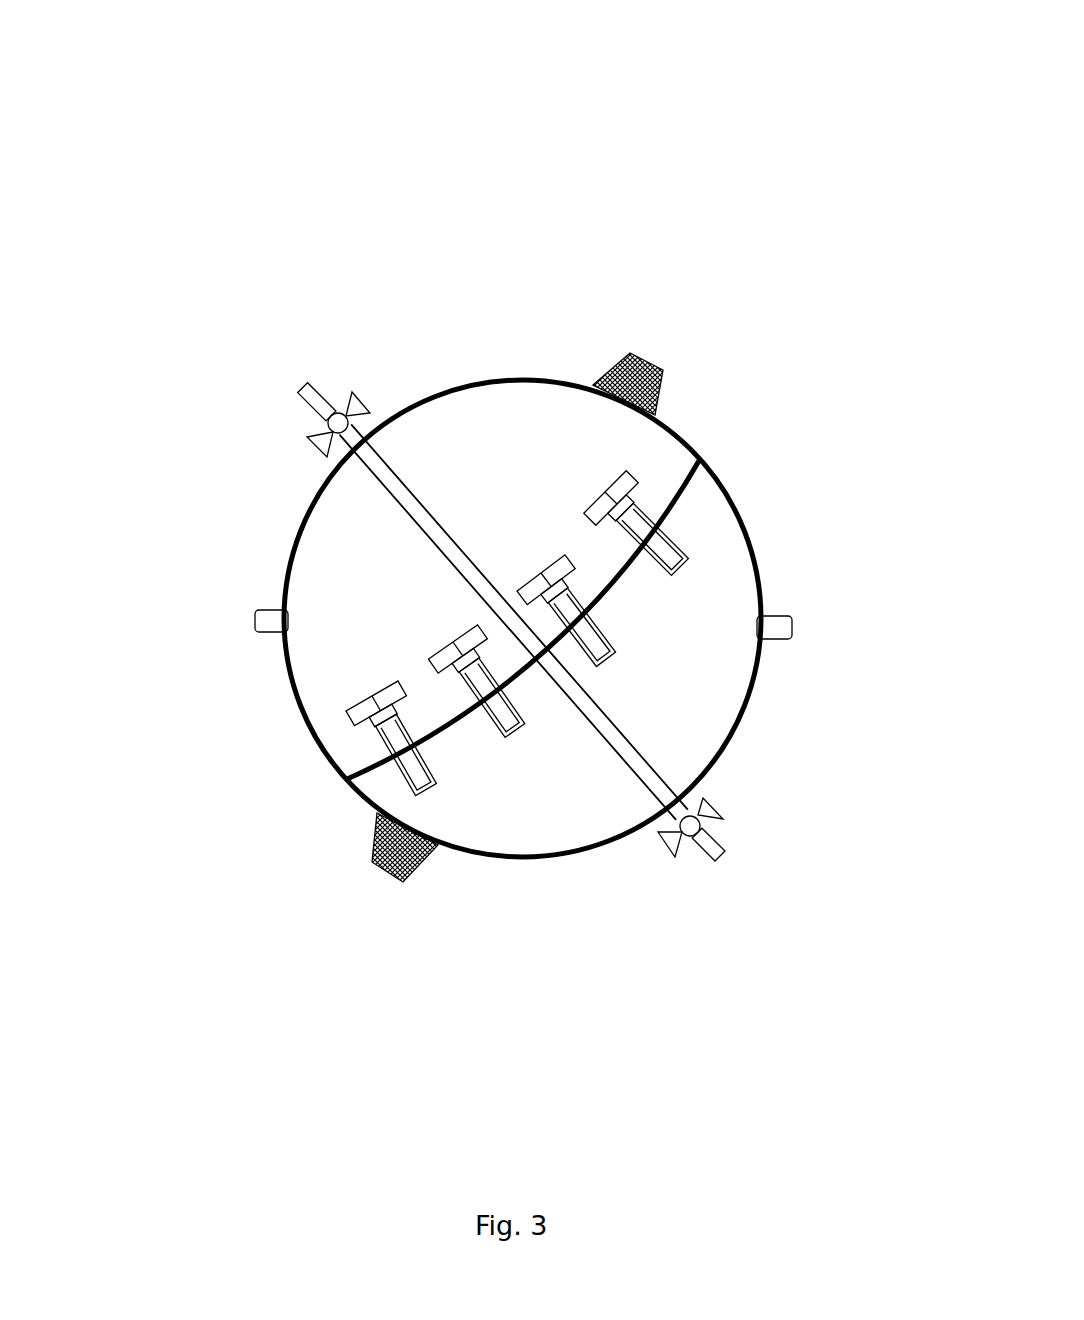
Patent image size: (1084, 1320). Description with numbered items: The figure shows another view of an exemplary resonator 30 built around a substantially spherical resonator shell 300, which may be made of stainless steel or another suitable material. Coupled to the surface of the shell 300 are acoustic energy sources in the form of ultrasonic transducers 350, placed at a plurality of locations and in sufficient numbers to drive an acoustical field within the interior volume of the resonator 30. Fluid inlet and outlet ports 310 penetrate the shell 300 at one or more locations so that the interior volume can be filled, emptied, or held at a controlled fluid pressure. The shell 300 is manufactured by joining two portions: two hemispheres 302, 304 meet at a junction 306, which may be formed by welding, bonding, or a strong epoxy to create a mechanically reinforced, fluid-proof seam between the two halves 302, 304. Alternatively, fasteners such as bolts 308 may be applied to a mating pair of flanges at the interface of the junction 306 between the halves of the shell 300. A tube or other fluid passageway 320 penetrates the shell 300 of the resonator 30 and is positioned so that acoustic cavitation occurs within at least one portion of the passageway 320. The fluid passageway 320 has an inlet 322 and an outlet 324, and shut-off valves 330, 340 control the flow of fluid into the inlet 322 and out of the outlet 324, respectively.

The resonator 30 is at (363, 110).
The resonator shell 300 is at (402, 403).
The hemisphere 302 is at (680, 428).
The hemisphere 304 is at (750, 530).
The junction 306 is at (367, 755).
The bolts 308 is at (600, 493).
The fluid inlet and outlet ports 310 is at (792, 628).
The fluid passageway 320 is at (446, 537).
The inlet 322 is at (297, 392).
The outlet 324 is at (720, 840).
The shut-off valve 330 is at (307, 440).
The shut-off valve 340 is at (660, 852).
The ultrasonic transducers 350 is at (647, 350).